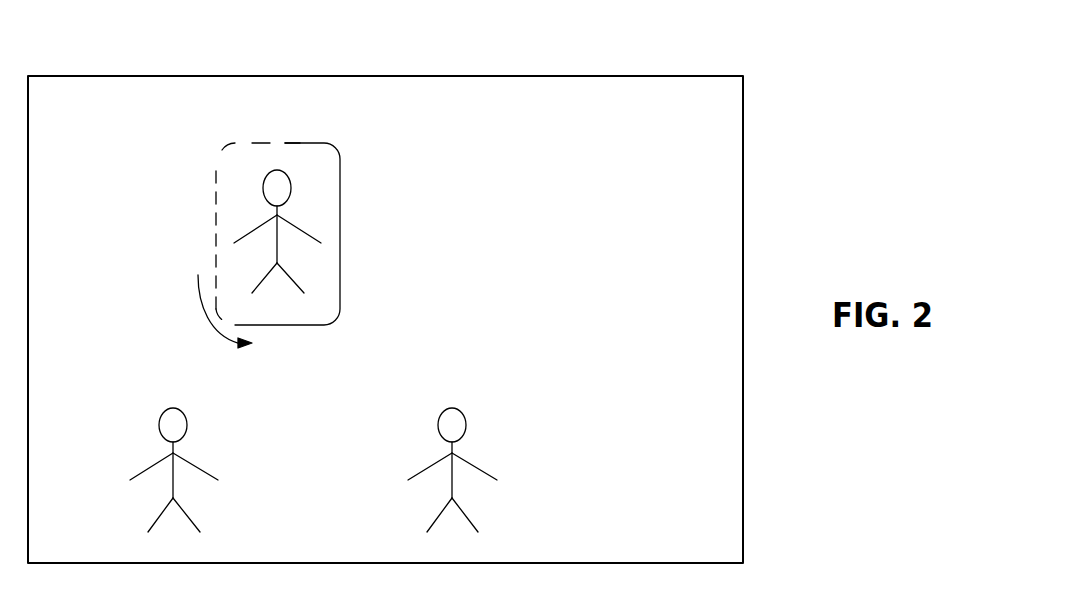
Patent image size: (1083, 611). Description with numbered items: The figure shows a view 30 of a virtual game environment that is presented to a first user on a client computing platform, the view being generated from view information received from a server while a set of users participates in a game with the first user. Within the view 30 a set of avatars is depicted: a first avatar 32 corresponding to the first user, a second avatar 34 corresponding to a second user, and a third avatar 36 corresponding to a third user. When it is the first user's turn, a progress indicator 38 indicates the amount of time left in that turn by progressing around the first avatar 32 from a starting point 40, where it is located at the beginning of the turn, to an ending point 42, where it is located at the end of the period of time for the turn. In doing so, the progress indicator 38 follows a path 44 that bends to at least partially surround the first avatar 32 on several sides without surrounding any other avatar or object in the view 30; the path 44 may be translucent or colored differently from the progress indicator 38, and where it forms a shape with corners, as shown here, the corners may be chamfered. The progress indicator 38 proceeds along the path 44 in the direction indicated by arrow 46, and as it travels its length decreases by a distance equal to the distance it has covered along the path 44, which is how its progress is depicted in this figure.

The view 30 is at (598, 76).
The first avatar 32 is at (282, 213).
The second avatar 34 is at (464, 415).
The third avatar 36 is at (185, 415).
The progress indicator 38 is at (340, 267).
The starting point 40 is at (270, 143).
The ending point 42 is at (285, 143).
The path 44 is at (216, 237).
The arrow 46 is at (207, 325).